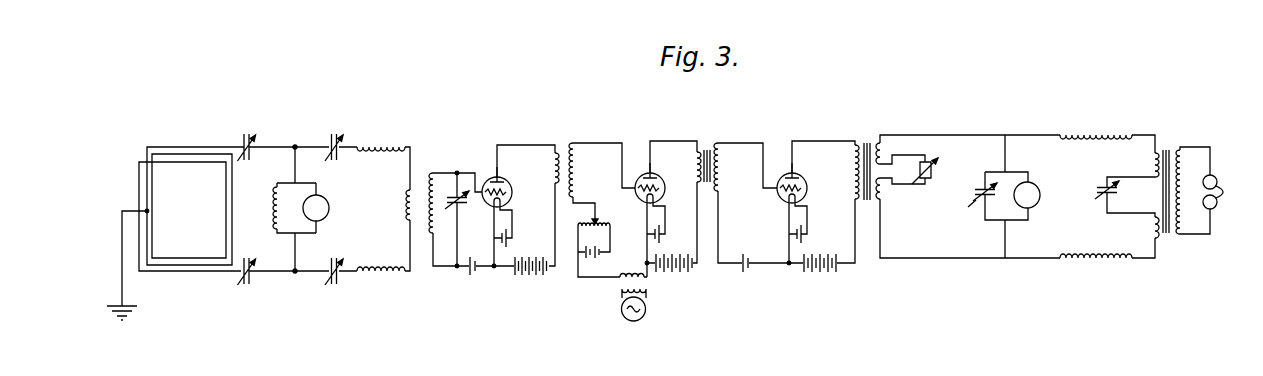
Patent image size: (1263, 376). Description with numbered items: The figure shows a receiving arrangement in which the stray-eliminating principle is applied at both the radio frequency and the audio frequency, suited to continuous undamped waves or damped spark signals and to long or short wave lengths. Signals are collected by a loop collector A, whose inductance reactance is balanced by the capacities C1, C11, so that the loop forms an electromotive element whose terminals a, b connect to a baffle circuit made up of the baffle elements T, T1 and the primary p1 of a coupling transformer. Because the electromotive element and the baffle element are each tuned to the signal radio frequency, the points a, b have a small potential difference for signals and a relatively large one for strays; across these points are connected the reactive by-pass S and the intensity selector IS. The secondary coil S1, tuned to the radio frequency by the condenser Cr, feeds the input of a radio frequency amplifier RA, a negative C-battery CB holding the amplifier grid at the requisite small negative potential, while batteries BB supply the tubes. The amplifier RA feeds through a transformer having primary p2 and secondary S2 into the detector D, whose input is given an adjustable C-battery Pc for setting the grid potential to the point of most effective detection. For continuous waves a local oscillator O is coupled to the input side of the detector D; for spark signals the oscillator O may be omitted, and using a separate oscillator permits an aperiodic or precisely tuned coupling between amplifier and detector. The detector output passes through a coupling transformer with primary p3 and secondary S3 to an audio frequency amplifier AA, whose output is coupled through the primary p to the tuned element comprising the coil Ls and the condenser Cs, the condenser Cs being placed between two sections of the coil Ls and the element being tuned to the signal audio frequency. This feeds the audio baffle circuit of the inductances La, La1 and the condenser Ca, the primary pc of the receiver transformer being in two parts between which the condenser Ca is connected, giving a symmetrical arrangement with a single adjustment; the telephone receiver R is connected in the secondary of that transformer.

The loop collector A is at (175, 233).
The capacity C1 is at (242, 138).
The capacity C11 is at (249, 279).
The terminal a is at (293, 136).
The terminal b is at (294, 283).
The baffle element T is at (365, 141).
The baffle element T1 is at (365, 278).
The reactive by-pass S is at (639, 202).
The intensity selector IS is at (671, 207).
The primary p1 is at (397, 206).
The radio frequency amplifier RA is at (496, 184).
The secondary coil S1 is at (442, 209).
The condenser Cr is at (460, 219).
The primary p2 is at (544, 170).
The C-battery CB is at (606, 277).
The B battery BB is at (675, 277).
The detector D is at (646, 182).
The secondary S2 is at (583, 170).
The adjustable C-battery Pc is at (612, 239).
The primary p3 is at (686, 169).
The local oscillator O is at (634, 317).
The audio frequency amplifier AA is at (793, 181).
The secondary S3 is at (728, 167).
The primary p is at (843, 172).
The coil Ls is at (902, 170).
The condenser Cs is at (931, 170).
The inductance La is at (1096, 125).
The inductance coil La1 is at (1096, 270).
The primary pc is at (1145, 192).
The condenser Ca is at (1101, 203).
The telephone receiver R is at (1206, 190).